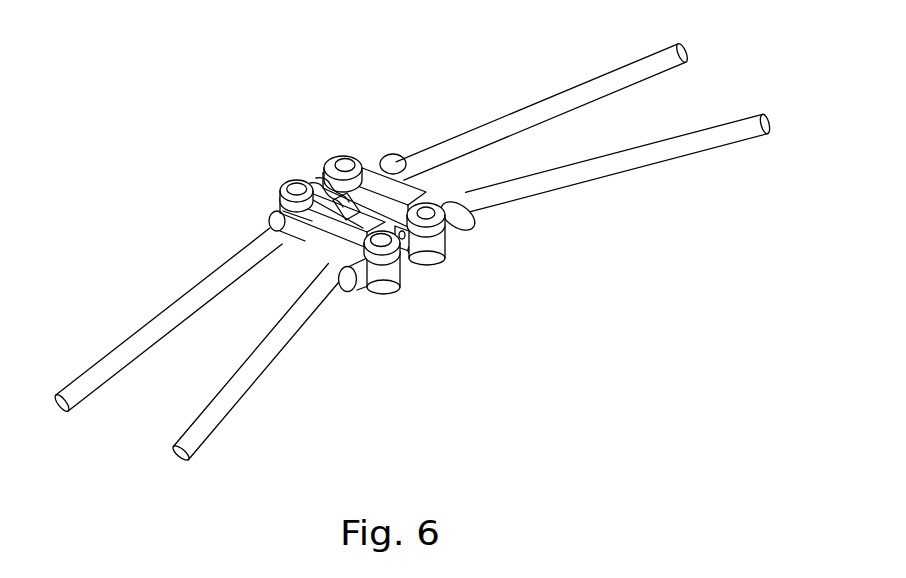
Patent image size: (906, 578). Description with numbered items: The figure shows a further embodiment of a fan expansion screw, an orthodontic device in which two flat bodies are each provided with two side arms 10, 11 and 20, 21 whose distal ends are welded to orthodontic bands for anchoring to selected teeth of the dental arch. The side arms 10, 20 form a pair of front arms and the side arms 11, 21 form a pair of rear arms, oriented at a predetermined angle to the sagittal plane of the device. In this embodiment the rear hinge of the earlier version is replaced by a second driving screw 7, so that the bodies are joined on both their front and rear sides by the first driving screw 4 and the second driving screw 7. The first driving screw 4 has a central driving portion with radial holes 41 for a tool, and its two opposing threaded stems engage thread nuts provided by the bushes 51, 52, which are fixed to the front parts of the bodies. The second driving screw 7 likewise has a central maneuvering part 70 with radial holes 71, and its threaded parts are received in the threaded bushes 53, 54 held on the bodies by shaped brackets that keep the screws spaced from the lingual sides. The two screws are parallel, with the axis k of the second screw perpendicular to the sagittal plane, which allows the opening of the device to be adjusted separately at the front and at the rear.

The driving screw 4 is at (353, 306).
The second driving screw 7 is at (250, 216).
The side arm 10 is at (693, 143).
The side arm 11 is at (645, 62).
The side arm 20 is at (203, 437).
The side arm 21 is at (105, 367).
The radial holes 41 is at (418, 265).
The bush 51 is at (440, 248).
The bush 52 is at (388, 277).
The threaded bush 53 is at (290, 193).
The threaded bush 54 is at (359, 126).
The central maneuvering part 70 is at (335, 163).
The radial holes 71 is at (308, 166).
The axis of the second driving screw k is at (258, 229).